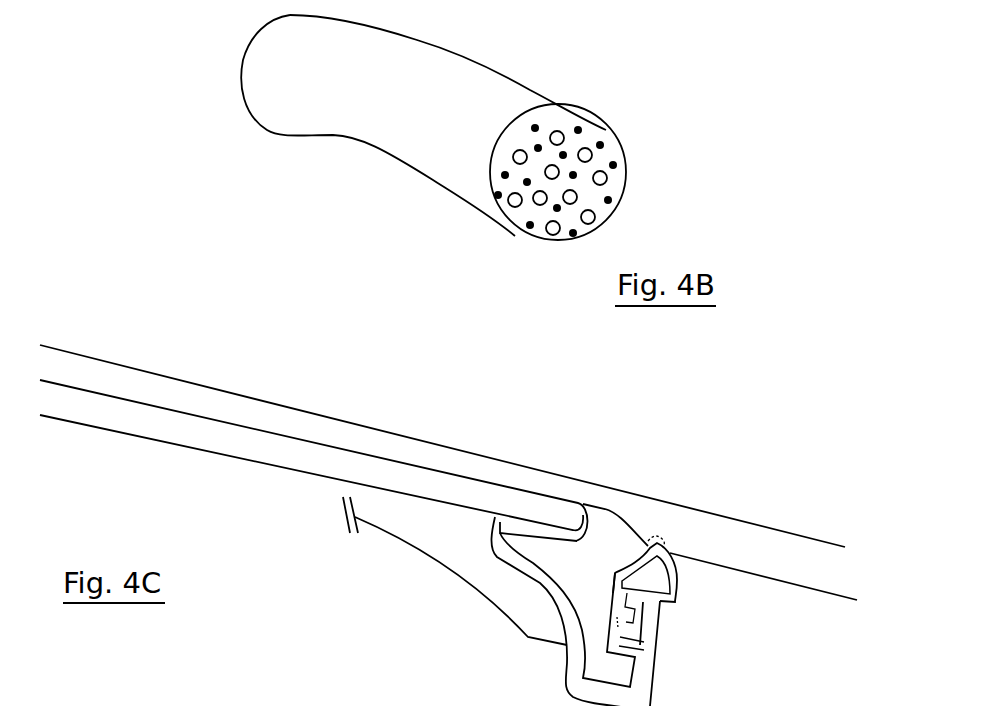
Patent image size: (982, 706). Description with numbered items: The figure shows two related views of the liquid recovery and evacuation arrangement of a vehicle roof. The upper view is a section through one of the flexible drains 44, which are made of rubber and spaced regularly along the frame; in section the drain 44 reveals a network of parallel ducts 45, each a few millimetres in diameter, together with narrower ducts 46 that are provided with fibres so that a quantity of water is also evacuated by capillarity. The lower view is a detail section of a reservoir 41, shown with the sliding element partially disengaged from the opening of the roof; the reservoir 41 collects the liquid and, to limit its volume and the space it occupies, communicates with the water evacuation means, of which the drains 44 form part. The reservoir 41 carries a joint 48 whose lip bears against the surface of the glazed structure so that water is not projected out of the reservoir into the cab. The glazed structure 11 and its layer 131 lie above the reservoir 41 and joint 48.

In FIG. 4C, the panel 11 is at (703, 535).
In FIG. 4C, the panel layer 131 is at (212, 437).
In FIG. 4C, the reservoir 41 is at (577, 660).
In FIG. 4B, the flexible drain 44 is at (410, 190).
In FIG. 4B, the parallel duct 45 is at (508, 197).
In FIG. 4B, the narrower duct 46 is at (534, 128).
In FIG. 4C, the joint 48 is at (680, 603).